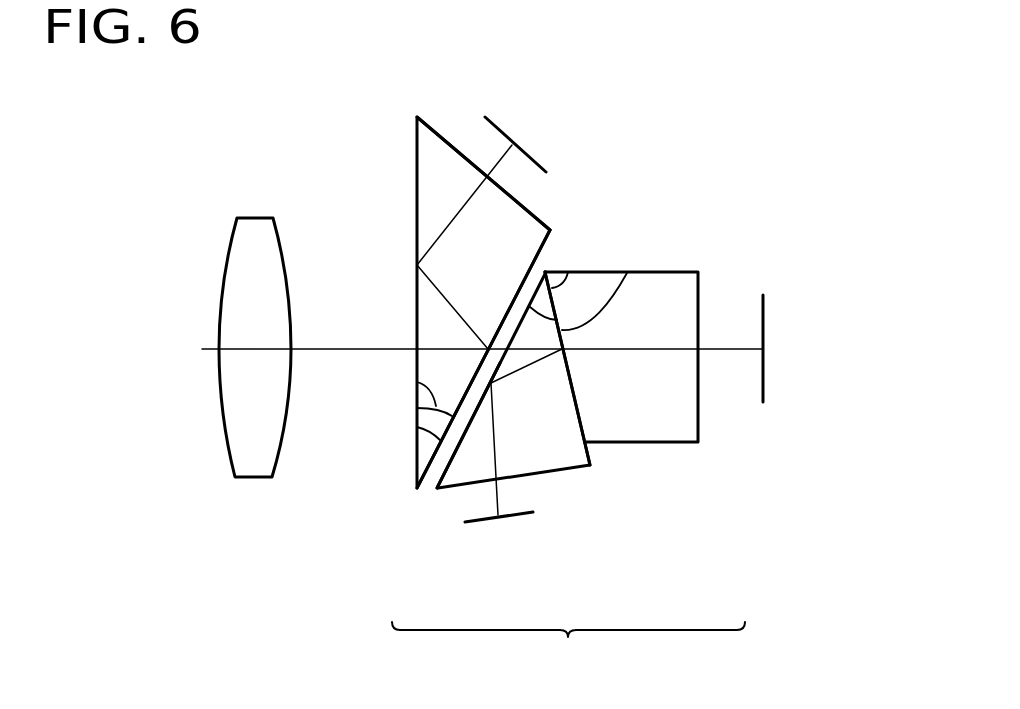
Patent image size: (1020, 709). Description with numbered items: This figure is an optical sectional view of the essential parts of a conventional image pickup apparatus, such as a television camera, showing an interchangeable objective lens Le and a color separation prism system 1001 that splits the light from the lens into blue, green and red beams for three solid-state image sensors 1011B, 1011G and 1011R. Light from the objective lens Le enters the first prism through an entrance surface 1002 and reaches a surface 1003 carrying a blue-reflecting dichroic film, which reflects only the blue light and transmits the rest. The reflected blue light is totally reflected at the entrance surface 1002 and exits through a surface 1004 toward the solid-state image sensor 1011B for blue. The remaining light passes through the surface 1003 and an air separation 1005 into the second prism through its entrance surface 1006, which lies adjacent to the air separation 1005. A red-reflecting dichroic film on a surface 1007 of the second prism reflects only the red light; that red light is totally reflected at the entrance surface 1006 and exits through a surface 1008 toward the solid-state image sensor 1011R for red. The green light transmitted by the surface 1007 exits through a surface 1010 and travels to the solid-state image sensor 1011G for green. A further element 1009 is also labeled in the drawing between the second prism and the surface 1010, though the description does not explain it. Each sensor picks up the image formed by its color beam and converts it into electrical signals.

The objective lens Le is at (258, 217).
The prism system 1001 is at (555, 400).
The entrance surface 1002 is at (416, 475).
The surface with blue-reflecting dichroic film 1003 is at (417, 427).
The exit surface 1004 is at (518, 202).
The air separation 1005 is at (432, 475).
The entrance surface 1006 is at (458, 458).
The surface with red-reflecting dichroic film 1007 is at (588, 464).
The exit surface 1008 is at (570, 468).
The air gap between plate and third prism 1009 is at (568, 272).
The exit surface 1010 is at (697, 303).
The solid-state image sensor for blue color 1011B is at (525, 150).
The solid-state image sensor for green color 1011G is at (764, 326).
The solid-state image sensor for red color 1011R is at (518, 518).